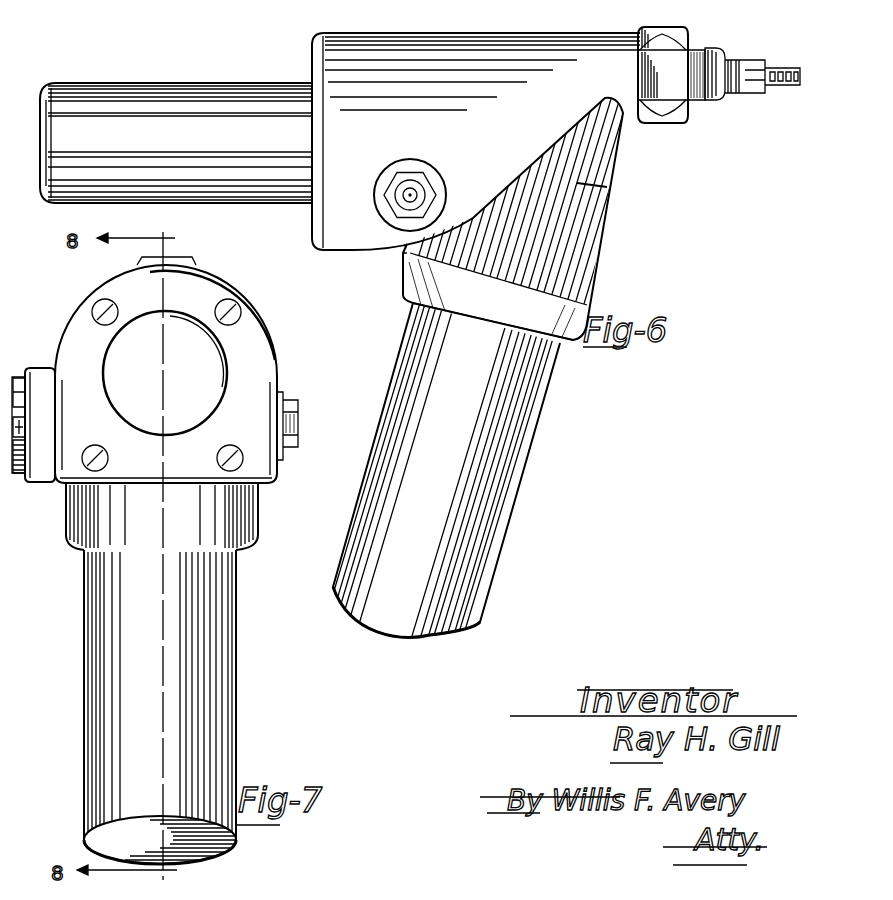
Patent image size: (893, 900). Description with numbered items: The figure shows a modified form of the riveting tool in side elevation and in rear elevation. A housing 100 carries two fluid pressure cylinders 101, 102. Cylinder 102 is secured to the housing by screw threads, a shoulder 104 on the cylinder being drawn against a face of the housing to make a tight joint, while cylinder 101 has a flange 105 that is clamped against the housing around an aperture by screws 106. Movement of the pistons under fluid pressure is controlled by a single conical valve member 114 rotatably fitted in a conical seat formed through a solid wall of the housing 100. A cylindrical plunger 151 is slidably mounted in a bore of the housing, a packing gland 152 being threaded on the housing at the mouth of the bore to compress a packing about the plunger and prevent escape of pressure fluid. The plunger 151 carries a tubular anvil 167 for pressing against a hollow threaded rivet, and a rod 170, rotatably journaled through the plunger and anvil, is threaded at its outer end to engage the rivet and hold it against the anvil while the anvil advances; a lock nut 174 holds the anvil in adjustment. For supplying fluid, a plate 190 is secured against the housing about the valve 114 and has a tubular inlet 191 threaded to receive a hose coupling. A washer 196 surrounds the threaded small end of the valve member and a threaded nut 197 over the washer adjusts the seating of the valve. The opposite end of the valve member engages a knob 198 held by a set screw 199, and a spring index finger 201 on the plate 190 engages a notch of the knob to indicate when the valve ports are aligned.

In FIG. 6, the housing 100 is at (468, 55).
In FIG. 6, the fluid pressure cylinder 101 is at (168, 100).
In FIG. 7, the fluid pressure cylinder 101 is at (213, 375).
In FIG. 6, the fluid pressure cylinder 102 is at (515, 455).
In FIG. 7, the fluid pressure cylinder 102 is at (223, 677).
In FIG. 6, the shoulder 104 is at (412, 290).
In FIG. 7, the shoulder 104 is at (257, 520).
In FIG. 6, the flange 105 is at (318, 58).
In FIG. 7, the flange 105 is at (257, 337).
In FIG. 7, the screws 106 is at (235, 313).
In FIG. 6, the valve member 114 is at (397, 197).
In FIG. 7, the valve member 114 is at (298, 437).
In FIG. 6, the plunger 151 is at (697, 63).
In FIG. 6, the packing gland 152 is at (660, 28).
In FIG. 7, the packing gland 152 is at (192, 263).
In FIG. 6, the tubular anvil 167 is at (743, 57).
In FIG. 6, the rod 170 is at (780, 87).
In FIG. 6, the lock nut 174 is at (713, 47).
In FIG. 7, the plate 190 is at (33, 470).
In FIG. 7, the tubular inlet 191 is at (14, 470).
In FIG. 6, the washer 196 is at (375, 193).
In FIG. 7, the washer 196 is at (283, 400).
In FIG. 6, the threaded nut 197 is at (407, 217).
In FIG. 7, the threaded nut 197 is at (293, 403).
In FIG. 7, the knob 198 is at (13, 375).
In FIG. 7, the set screw 199 is at (15, 397).
In FIG. 7, the spring index finger 201 is at (18, 380).